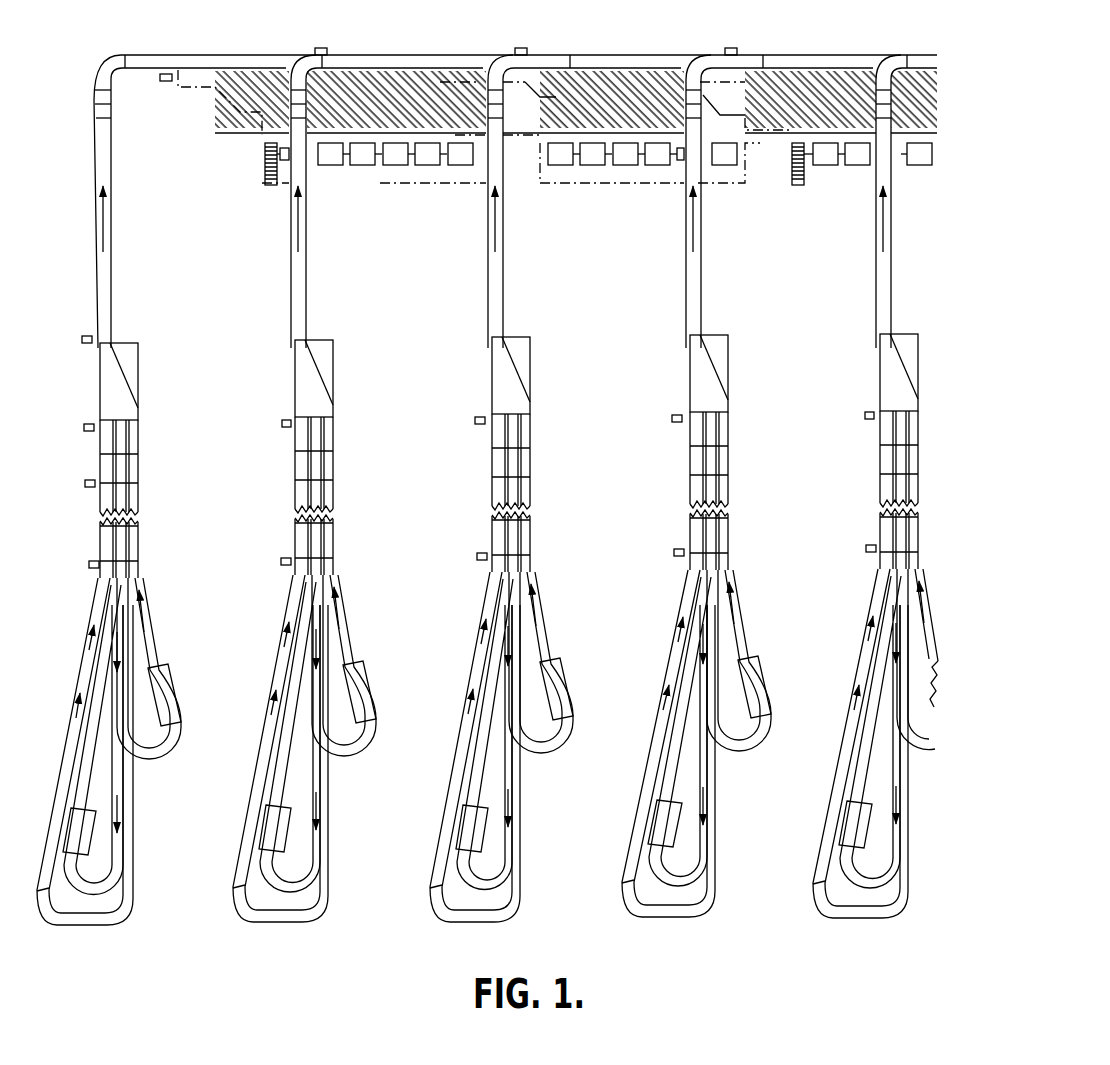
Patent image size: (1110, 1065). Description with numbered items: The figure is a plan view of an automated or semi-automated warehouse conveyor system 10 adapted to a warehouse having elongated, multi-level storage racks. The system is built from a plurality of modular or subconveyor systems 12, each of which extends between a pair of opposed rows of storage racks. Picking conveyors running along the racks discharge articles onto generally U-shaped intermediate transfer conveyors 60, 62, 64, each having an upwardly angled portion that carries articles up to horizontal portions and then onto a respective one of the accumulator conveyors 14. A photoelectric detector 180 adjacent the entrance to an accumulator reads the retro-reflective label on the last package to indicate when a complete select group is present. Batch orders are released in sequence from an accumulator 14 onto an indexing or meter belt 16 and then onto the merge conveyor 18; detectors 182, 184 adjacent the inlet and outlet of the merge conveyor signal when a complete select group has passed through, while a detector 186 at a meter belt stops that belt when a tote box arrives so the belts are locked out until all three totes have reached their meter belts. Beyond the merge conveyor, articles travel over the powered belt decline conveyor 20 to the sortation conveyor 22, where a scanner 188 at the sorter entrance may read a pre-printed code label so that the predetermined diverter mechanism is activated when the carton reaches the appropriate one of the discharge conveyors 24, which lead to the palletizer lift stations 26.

The warehouse conveyor system 10 is at (487, 521).
The modular conveyor system 12 is at (124, 512).
The accumulator conveyor 14 is at (130, 553).
The indexing or meter belt 16 is at (128, 442).
The merge conveyor 18 is at (145, 381).
The powered belt decline conveyor 20 is at (116, 228).
The sortation conveyor 22 is at (529, 48).
The discharge conveyor 24 is at (332, 86).
The palletizer lift station 26 is at (425, 164).
The intermediate transfer conveyor 60 is at (96, 922).
The intermediate transfer conveyor 62 is at (150, 833).
The intermediate transfer conveyor 64 is at (172, 748).
The photoelectric detector 180 is at (73, 548).
The detector 182 is at (73, 399).
The detector 184 is at (69, 320).
The detector 186 is at (85, 484).
The scanner 188 is at (150, 102).